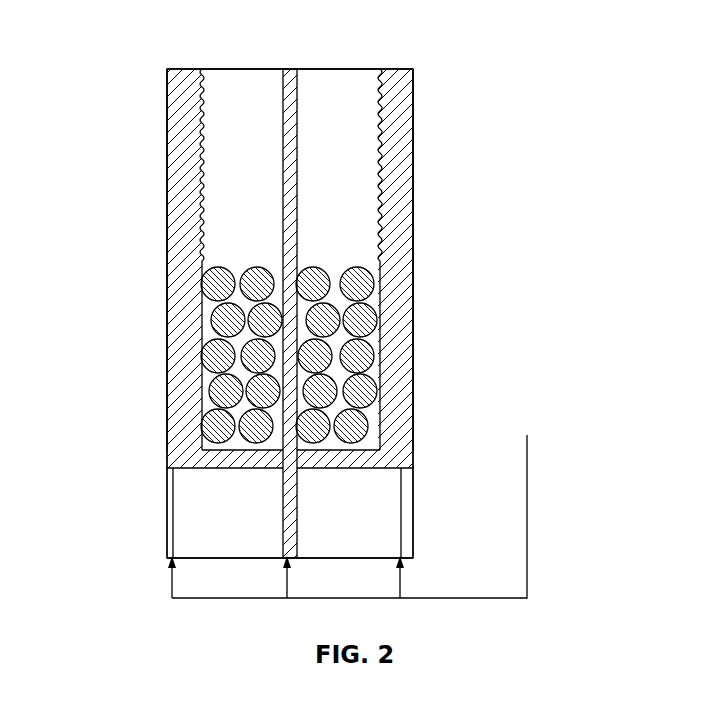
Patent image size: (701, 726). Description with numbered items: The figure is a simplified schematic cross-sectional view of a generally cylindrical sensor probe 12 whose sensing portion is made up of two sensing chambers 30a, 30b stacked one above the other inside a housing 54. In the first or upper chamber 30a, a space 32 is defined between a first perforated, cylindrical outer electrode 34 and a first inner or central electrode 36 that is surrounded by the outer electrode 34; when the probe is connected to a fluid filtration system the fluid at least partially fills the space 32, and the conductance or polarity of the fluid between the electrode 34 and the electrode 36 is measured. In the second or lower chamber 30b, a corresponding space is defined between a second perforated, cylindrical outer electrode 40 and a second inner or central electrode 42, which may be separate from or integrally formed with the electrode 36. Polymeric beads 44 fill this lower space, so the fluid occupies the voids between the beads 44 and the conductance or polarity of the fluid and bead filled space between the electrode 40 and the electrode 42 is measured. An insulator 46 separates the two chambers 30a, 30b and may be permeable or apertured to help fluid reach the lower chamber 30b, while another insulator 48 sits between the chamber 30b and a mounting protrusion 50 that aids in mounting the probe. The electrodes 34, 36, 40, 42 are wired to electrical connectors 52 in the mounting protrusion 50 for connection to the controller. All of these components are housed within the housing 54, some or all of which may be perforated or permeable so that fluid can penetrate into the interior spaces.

The probe 12 is at (504, 40).
The first or upper chamber 30a is at (150, 68).
The second or lower chamber 30b is at (150, 262).
The space 32 is at (222, 91).
The first perforated, cylindrical outer electrode 34 is at (380, 100).
The first inner or central electrode 36 is at (283, 97).
The second perforated, cylindrical outer electrode 40 is at (413, 403).
The second inner or central electrode 42 is at (268, 265).
The polymeric beads 44 is at (318, 268).
The insulator 46 is at (243, 264).
The insulator 48 is at (413, 461).
The mounting protrusion 50 is at (413, 515).
The electrical connectors 52 is at (177, 593).
The housing 54 is at (413, 107).